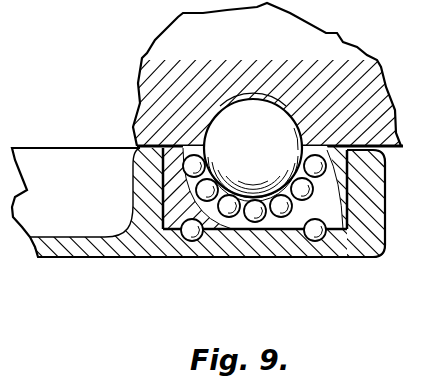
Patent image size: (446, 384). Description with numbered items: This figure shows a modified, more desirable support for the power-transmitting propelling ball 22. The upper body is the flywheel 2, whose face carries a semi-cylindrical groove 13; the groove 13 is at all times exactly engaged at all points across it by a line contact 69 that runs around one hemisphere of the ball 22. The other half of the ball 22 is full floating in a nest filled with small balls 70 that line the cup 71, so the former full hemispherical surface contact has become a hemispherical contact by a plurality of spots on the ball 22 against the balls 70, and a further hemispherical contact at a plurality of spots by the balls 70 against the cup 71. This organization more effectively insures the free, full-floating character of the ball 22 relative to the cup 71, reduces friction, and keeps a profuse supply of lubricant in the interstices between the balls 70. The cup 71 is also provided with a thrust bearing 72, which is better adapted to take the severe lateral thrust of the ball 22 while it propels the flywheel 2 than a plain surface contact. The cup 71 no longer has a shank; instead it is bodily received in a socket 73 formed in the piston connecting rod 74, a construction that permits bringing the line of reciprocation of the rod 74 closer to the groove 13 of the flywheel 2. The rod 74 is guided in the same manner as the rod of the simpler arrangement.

The flywheel 2 is at (137, 95).
The semi-cylindrical groove 13 is at (273, 101).
The propelling ball 22 is at (253, 164).
The line contact 69 is at (212, 128).
The balls 70 is at (256, 222).
The cup 71 is at (340, 233).
The thrust bearing 72 is at (315, 241).
The socket 73 is at (347, 202).
The piston connecting rod 74 is at (385, 282).